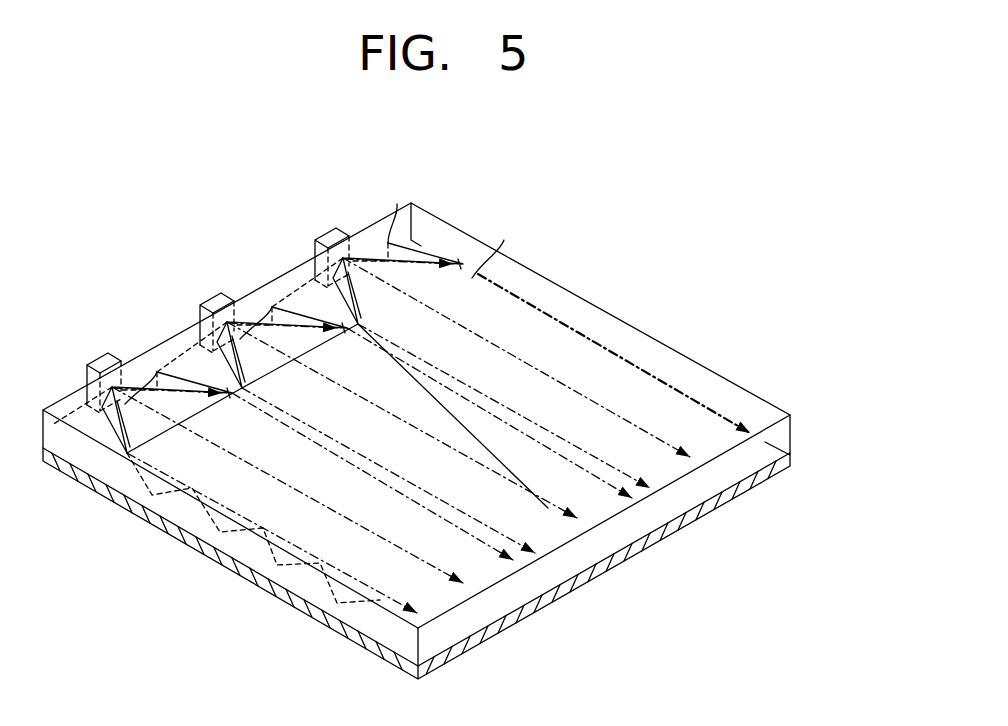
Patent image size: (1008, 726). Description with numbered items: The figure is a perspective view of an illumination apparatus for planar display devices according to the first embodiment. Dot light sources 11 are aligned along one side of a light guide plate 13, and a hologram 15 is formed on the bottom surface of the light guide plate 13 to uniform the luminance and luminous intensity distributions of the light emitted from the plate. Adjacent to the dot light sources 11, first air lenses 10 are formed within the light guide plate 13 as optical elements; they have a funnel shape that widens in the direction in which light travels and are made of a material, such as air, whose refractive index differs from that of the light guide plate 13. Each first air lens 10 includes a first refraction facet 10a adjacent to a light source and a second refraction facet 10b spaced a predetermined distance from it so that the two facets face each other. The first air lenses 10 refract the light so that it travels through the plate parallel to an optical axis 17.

The first air lens 10 is at (425, 257).
The first refraction facet 10a is at (397, 204).
The second refraction facet 10b is at (504, 240).
The dot light source 11 is at (328, 240).
The light guide plate 13 is at (787, 435).
The hologram 15 is at (788, 462).
The optical axis 17 is at (548, 508).